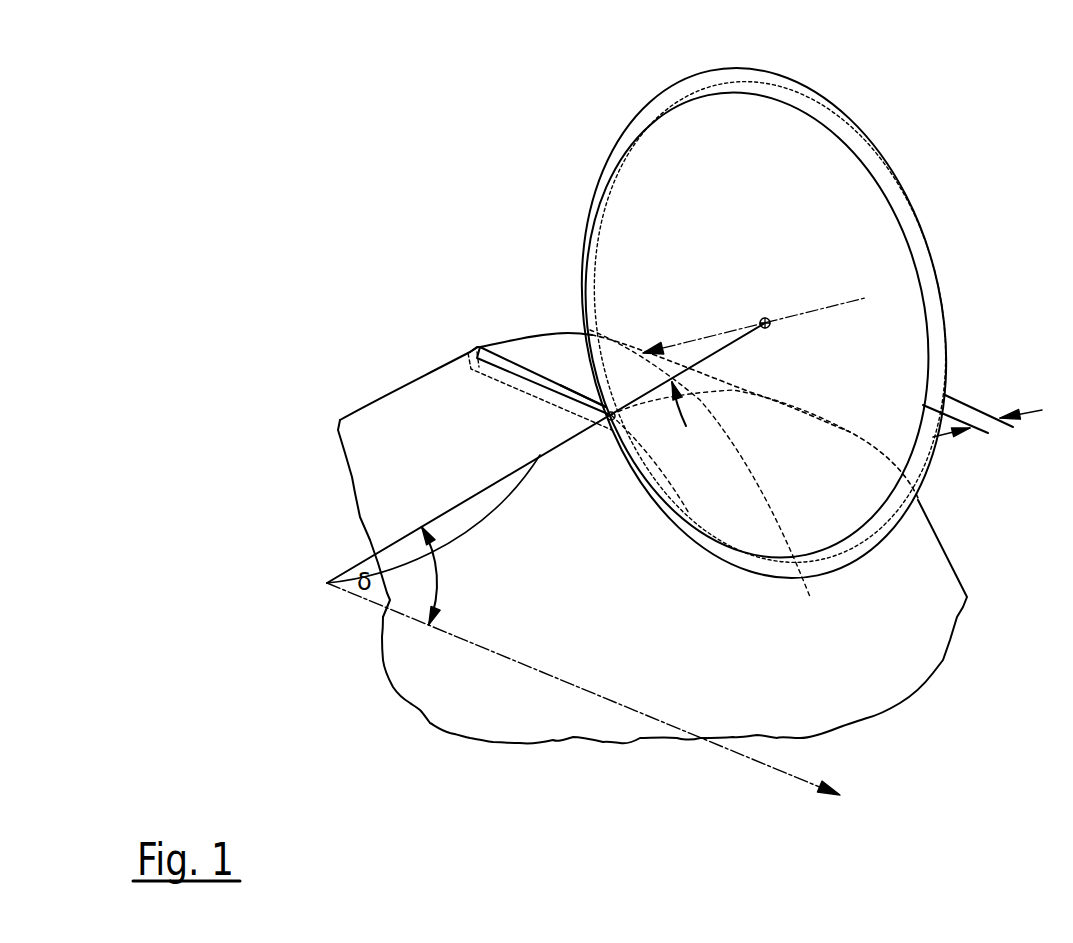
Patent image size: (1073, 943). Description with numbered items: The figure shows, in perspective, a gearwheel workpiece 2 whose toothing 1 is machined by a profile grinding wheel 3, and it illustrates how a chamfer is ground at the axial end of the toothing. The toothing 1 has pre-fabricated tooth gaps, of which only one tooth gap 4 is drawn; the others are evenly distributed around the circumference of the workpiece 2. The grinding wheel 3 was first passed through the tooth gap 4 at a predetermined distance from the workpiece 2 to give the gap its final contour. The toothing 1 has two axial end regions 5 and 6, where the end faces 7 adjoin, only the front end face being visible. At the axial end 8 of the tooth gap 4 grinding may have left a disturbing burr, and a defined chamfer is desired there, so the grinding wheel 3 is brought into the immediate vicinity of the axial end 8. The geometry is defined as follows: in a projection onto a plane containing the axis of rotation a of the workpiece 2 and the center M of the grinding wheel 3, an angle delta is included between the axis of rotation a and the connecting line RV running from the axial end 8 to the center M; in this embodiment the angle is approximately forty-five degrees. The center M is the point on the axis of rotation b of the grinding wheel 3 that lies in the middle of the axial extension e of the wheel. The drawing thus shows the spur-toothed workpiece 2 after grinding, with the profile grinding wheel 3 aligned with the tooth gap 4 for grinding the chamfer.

The toothing 1 is at (397, 417).
The workpiece 2 is at (385, 488).
The profile grinding wheel 3 is at (872, 228).
The tooth gap 4 is at (532, 375).
The axial end region 5 is at (611, 452).
The axial end region 6 is at (476, 316).
The end face 7 is at (525, 588).
The axial end of the tooth gap 8 is at (603, 405).
The center of the grinding wheel M is at (763, 318).
The axis of rotation of the grinding wheel b is at (665, 323).
The connecting line RV is at (696, 429).
The axial extension of the grinding wheel e is at (982, 433).
The axis of rotation of the workpiece a is at (605, 702).